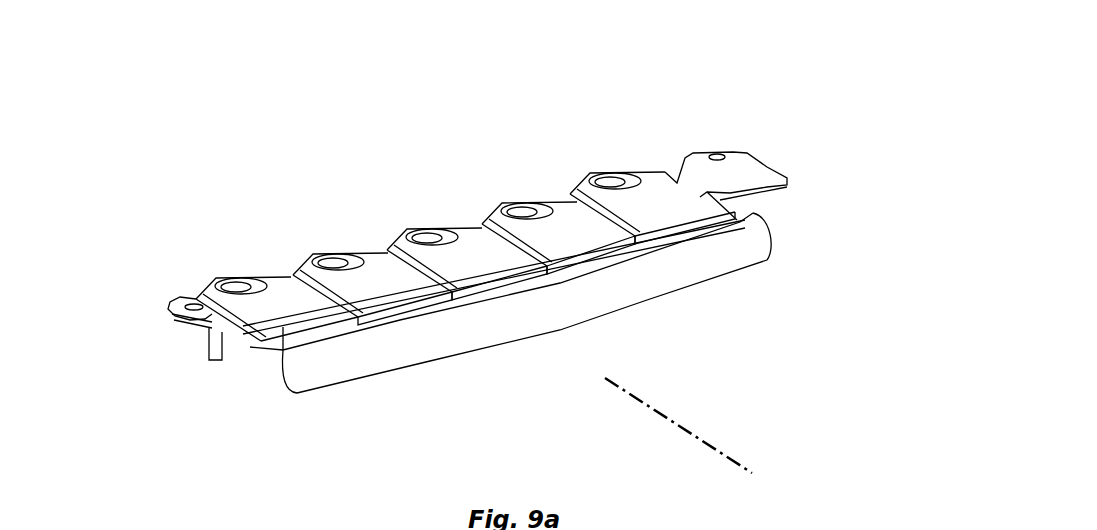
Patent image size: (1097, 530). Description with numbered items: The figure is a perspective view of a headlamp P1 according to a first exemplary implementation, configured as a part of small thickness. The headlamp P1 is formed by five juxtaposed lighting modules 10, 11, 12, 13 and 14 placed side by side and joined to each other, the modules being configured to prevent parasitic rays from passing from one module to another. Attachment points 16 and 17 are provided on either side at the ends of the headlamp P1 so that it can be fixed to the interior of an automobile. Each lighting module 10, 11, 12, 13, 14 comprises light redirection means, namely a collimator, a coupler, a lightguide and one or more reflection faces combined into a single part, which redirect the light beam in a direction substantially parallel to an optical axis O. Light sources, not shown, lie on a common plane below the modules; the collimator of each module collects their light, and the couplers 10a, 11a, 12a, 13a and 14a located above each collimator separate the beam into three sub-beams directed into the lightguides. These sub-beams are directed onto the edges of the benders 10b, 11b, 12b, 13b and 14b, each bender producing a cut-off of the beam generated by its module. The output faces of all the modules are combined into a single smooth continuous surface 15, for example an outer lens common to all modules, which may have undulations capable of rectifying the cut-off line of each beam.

The lighting module 10 is at (288, 303).
The coupler 10a is at (240, 285).
The bender 10b is at (283, 327).
The lighting module 11 is at (383, 277).
The coupler 11a is at (338, 257).
The bender 11b is at (395, 298).
The lighting module 12 is at (473, 255).
The coupler 12a is at (434, 240).
The bender 12b is at (498, 270).
The lighting module 13 is at (568, 228).
The coupler 13a is at (527, 207).
The bender 13b is at (597, 250).
The lighting module 14 is at (660, 200).
The coupler 14a is at (613, 175).
The bender 14b is at (662, 223).
The smooth continuous surface 15 is at (757, 233).
The attachment point 16 is at (170, 307).
The attachment point 17 is at (762, 170).
The headlamp P1 is at (818, 138).
The optical axis O is at (680, 425).